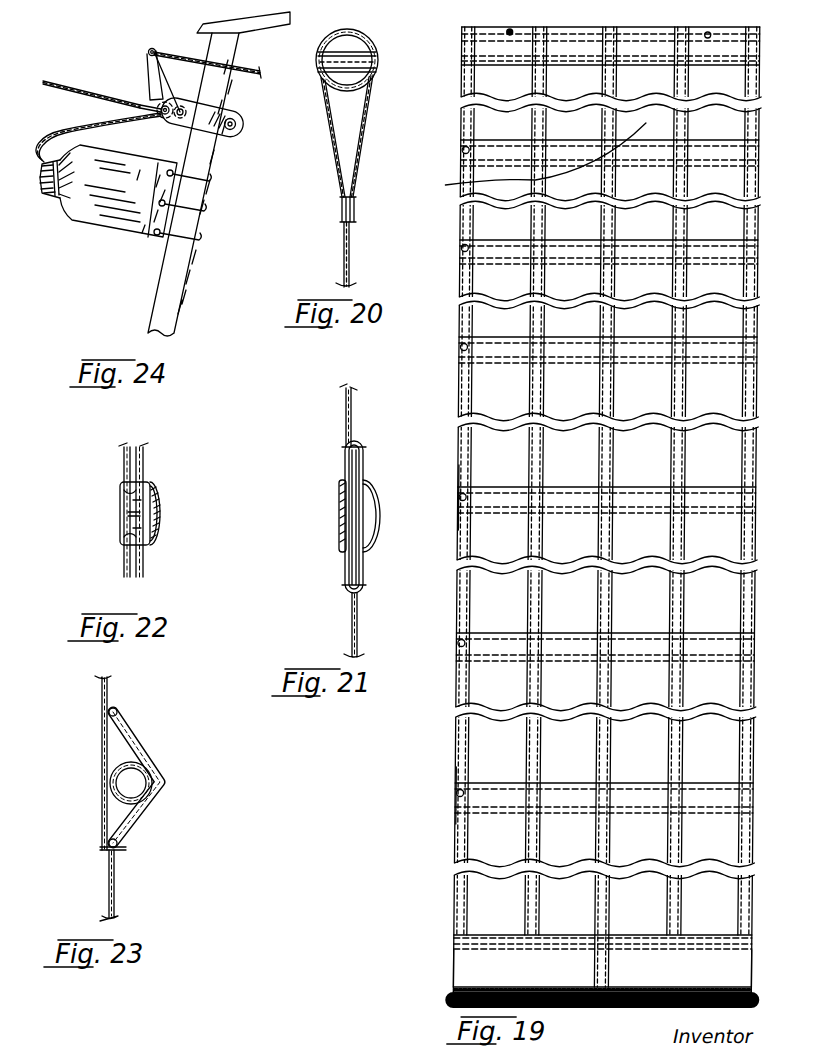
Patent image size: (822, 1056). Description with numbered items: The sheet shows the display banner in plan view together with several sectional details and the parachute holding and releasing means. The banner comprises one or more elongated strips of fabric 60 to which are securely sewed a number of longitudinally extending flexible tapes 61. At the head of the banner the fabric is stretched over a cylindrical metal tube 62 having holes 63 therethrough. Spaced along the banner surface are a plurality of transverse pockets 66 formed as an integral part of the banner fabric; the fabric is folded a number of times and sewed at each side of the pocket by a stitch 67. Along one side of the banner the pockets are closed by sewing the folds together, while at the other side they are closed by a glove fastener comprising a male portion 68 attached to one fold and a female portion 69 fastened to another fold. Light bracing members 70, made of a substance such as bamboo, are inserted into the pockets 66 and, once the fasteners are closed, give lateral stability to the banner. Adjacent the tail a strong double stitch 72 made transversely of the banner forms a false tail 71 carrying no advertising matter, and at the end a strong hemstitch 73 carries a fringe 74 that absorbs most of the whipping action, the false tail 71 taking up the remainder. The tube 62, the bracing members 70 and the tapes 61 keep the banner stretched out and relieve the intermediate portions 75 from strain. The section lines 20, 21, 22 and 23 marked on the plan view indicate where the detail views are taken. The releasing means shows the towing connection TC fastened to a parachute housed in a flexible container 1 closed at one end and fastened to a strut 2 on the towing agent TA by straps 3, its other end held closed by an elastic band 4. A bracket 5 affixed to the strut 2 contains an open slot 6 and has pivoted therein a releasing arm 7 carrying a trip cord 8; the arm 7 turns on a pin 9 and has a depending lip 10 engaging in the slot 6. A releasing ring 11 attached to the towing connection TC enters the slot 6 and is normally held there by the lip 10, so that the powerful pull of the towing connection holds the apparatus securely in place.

In FIG. 24, the flexible container 1 is at (110, 232).
In FIG. 24, the strut 2 is at (167, 303).
In FIG. 24, the straps 3 is at (205, 208).
In FIG. 24, the elastic band 4 is at (57, 198).
In FIG. 24, the bracket 5 is at (223, 104).
In FIG. 24, the open slot 6 is at (160, 114).
In FIG. 24, the releasing arm 7 is at (172, 95).
In FIG. 24, the trip cord 8 is at (262, 72).
In FIG. 24, the pin 9 is at (183, 107).
In FIG. 24, the depending lip 10 is at (164, 119).
In FIG. 24, the releasing ring 11 is at (158, 109).
In FIG. 24, the towing agent TA is at (197, 33).
In FIG. 24, the towing connection TC is at (72, 90).
In FIG. 19, the section line 20— 20 is at (509, 74).
In FIG. 19, the section line 21— 21 is at (460, 533).
In FIG. 19, the section line 22— 22 is at (458, 827).
In FIG. 19, the section line 23— 23 is at (571, 842).
In FIG. 20, the strips of fabric 60 is at (361, 147).
In FIG. 22, the strips of fabric 60 is at (146, 454).
In FIG. 21, the strips of fabric 60 is at (353, 423).
In FIG. 23, the strips of fabric 60 is at (100, 680).
In FIG. 19, the strips of fabric 60 is at (573, 228).
In FIG. 19, the flexible tapes 61 is at (540, 127).
In FIG. 20, the cylindrical metal tube 62 is at (357, 83).
In FIG. 19, the cylindrical metal tube 62 is at (488, 33).
In FIG. 20, the holes 63 is at (358, 62).
In FIG. 23, the transverse pockets 66 is at (126, 757).
In FIG. 23, the stitch 67 is at (125, 714).
In FIG. 22, the male portion 68 is at (122, 500).
In FIG. 21, the male portion 68 is at (340, 498).
In FIG. 22, the female portion 69 is at (158, 494).
In FIG. 21, the female portion 69 is at (382, 508).
In FIG. 23, the bracing members 70 is at (153, 764).
In FIG. 19, the bracing members 70 is at (500, 645).
In FIG. 19, the false tail 71 is at (475, 965).
In FIG. 19, the double stitch 72 is at (453, 943).
In FIG. 19, the hemstitch 73 is at (452, 988).
In FIG. 19, the fringe 74 is at (452, 999).
In FIG. 19, the intermediate portions 75 is at (607, 486).